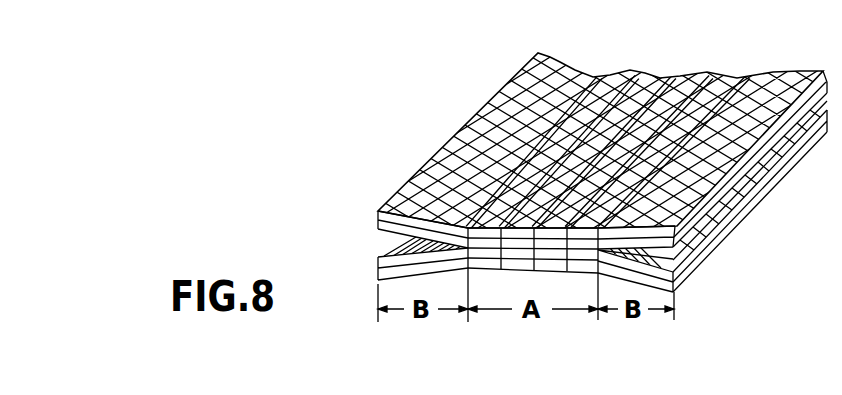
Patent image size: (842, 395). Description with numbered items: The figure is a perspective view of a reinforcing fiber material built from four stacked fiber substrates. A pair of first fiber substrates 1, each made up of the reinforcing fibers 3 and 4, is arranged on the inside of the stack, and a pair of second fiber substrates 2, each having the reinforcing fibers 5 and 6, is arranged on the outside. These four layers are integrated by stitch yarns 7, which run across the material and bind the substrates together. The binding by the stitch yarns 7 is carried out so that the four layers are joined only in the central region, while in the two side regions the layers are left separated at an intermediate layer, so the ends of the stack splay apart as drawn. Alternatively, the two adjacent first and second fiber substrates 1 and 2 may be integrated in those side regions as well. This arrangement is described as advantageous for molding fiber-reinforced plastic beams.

The first fiber substrate 1 is at (735, 223).
The second fiber substrate 2 is at (374, 268).
The reinforcing fiber 3 is at (686, 259).
The reinforcing fiber 4 is at (713, 234).
The reinforcing fiber 5 is at (426, 167).
The reinforcing fiber 6 is at (446, 146).
The stitch yarn 7 is at (593, 78).